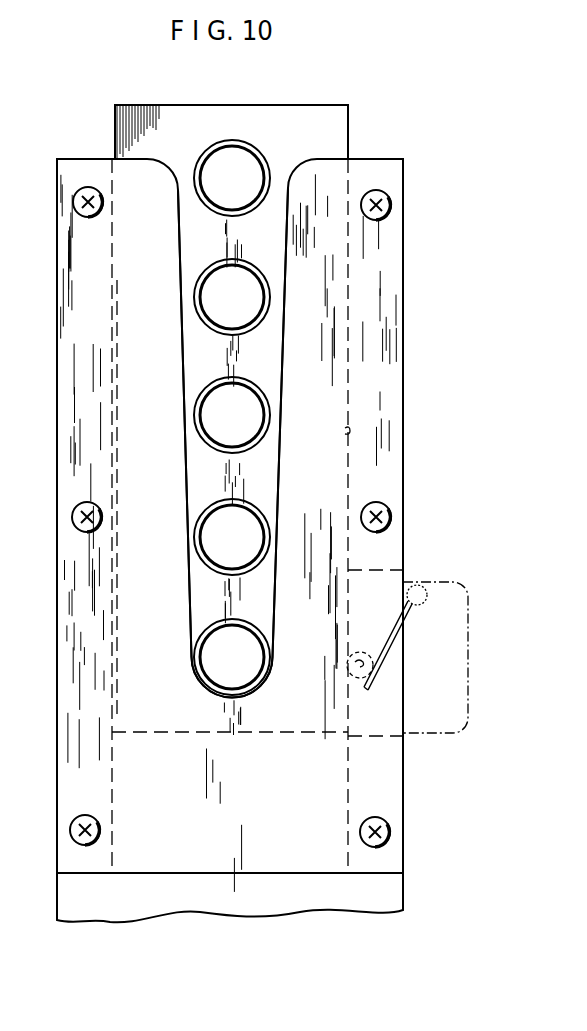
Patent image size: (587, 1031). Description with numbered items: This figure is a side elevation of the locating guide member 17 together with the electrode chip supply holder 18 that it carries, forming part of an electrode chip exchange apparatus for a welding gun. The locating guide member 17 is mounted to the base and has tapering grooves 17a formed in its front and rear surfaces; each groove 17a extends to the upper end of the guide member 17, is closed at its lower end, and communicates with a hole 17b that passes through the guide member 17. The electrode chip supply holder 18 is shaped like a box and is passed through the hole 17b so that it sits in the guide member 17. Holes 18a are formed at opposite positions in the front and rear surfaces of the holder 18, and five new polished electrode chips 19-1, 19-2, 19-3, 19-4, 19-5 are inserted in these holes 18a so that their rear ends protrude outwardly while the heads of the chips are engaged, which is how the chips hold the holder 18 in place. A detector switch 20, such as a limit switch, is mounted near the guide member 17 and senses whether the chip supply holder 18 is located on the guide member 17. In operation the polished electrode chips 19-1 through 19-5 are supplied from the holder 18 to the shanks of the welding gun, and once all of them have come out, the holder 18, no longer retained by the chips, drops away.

The locating guide member 17 is at (396, 233).
The tapering grooves 17a is at (280, 371).
The hole 17b is at (350, 436).
The electrode chip supply holder 18 is at (340, 131).
The holes 18a is at (237, 143).
The electrode chip 19-1 is at (208, 660).
The electrode chip 19-2 is at (208, 535).
The electrode chip 19-3 is at (210, 420).
The electrode chip 19-4 is at (210, 293).
The electrode chip 19-5 is at (210, 185).
The detector switch 20 is at (459, 581).